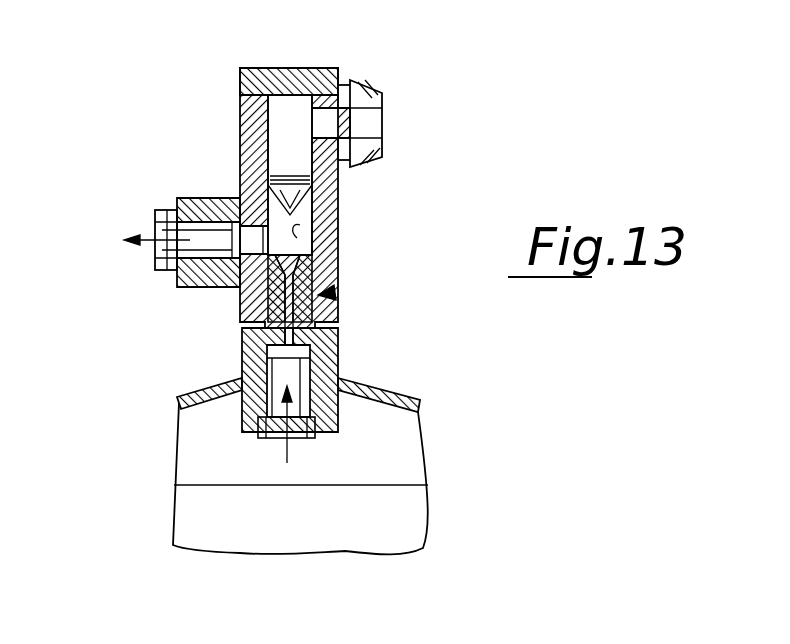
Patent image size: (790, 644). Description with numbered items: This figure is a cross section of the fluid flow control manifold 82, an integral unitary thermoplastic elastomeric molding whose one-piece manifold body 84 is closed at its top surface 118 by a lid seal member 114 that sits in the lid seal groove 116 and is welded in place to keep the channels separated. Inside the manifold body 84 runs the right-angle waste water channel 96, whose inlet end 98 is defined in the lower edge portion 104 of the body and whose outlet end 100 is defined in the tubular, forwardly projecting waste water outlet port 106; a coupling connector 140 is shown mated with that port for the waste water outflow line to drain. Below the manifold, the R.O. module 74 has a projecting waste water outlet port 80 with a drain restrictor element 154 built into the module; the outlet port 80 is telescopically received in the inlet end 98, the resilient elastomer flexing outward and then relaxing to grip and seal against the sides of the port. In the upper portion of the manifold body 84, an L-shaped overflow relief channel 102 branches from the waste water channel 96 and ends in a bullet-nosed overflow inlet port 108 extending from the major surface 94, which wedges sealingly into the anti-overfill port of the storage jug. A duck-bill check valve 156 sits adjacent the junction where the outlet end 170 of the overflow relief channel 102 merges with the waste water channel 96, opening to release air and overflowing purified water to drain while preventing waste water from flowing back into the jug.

The flow control manifold 82 is at (198, 58).
The manifold body 84 is at (250, 160).
The lid seal member 114 is at (300, 68).
The lid seal groove 116 is at (241, 68).
The top surface 118 is at (333, 68).
The overflow inlet port 108 is at (380, 92).
The overflow relief channel 102 is at (272, 125).
The outlet end 100 is at (258, 228).
The outlet end 170 is at (312, 212).
The duck-bill check valve 156 is at (306, 198).
The waste water channel 96 is at (340, 220).
The major surface 94 is at (340, 270).
The lower edge portion 104 is at (268, 318).
The inlet end 98 is at (332, 291).
The waste water outlet port 106 is at (185, 285).
The coupling connector 140 is at (156, 218).
The waste water outlet port 80 is at (340, 356).
The drain restrictor element 154 is at (340, 378).
The R.O. module 74 is at (395, 464).